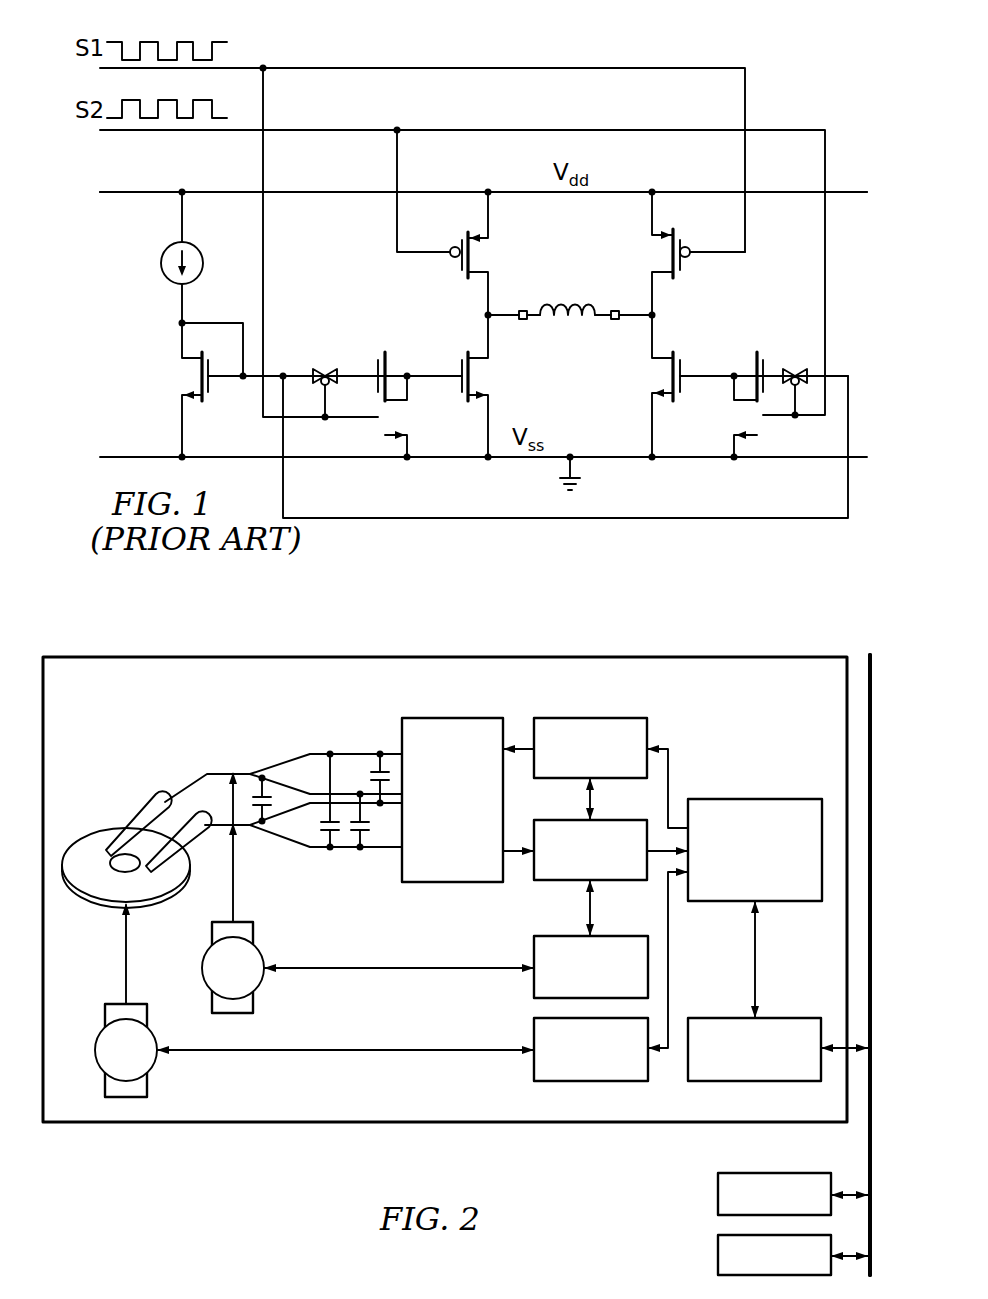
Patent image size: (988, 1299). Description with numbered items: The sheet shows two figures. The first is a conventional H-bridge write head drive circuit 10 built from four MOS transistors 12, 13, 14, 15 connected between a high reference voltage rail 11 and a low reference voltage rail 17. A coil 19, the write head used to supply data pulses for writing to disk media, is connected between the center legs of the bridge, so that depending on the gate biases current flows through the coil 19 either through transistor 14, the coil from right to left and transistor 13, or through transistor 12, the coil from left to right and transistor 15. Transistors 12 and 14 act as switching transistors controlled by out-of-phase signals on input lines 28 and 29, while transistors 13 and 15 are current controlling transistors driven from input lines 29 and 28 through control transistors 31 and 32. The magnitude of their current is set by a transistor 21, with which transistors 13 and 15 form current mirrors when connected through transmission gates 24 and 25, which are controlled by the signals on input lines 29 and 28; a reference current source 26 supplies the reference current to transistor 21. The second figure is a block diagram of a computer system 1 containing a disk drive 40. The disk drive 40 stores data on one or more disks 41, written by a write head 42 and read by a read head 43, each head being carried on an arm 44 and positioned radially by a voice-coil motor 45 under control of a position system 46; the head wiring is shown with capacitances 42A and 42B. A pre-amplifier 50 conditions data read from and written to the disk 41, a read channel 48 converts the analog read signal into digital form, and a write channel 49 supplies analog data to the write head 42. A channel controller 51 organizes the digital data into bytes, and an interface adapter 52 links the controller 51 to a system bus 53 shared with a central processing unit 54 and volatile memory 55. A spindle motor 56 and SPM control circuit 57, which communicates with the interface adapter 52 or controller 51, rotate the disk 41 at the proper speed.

In FIG. 1, the H-bridge write head drive circuit 10 is at (626, 48).
In FIG. 1, the channel controller 11 is at (446, 188).
In FIG. 1, the MOS transistor 12 is at (458, 249).
In FIG. 1, the MOS transistor 13 is at (458, 382).
In FIG. 1, the MOS transistor 14 is at (688, 250).
In FIG. 1, the MOS transistor 15 is at (688, 374).
In FIG. 1, the Vss ground rail 17 is at (618, 460).
In FIG. 1, the coil 19 is at (578, 310).
In FIG. 1, the transistor 21 is at (212, 389).
In FIG. 1, the transmission gate 24 is at (326, 368).
In FIG. 1, the transmission gate 25 is at (794, 367).
In FIG. 1, the reference current source 26 is at (160, 264).
In FIG. 1, the input line 28 is at (612, 128).
In FIG. 1, the input line 29 is at (338, 66).
In FIG. 1, the control transistor 31 is at (376, 428).
In FIG. 1, the control transistor 32 is at (764, 428).
In FIG. 2, the computer system 1 is at (306, 1151).
In FIG. 2, the disk drive 40 is at (224, 1124).
In FIG. 2, the disk 41 is at (108, 907).
In FIG. 2, the write head 42 is at (102, 832).
In FIG. 2, the head wiring capacitance 42A is at (304, 752).
In FIG. 2, the head wiring capacitance 42B is at (344, 792).
In FIG. 2, the read head 43 is at (168, 893).
In FIG. 2, the arm 44 is at (250, 774).
In FIG. 2, the voice-coil motor 45 is at (253, 930).
In FIG. 2, the position system 46 is at (532, 989).
In FIG. 2, the read channel 48 is at (547, 881).
In FIG. 2, the write channel 49 is at (648, 731).
In FIG. 2, the pre-amplifier 50 is at (452, 800).
In FIG. 2, the channel controller 51 is at (752, 799).
In FIG. 2, the interface adapter 52 is at (786, 1018).
In FIG. 2, the system bus 53 is at (868, 1142).
In FIG. 2, the central processing unit 54 is at (718, 1255).
In FIG. 2, the volatile memory 55 is at (718, 1197).
In FIG. 2, the spindle motor 56 is at (147, 1085).
In FIG. 2, the SPM control circuit 57 is at (532, 1069).